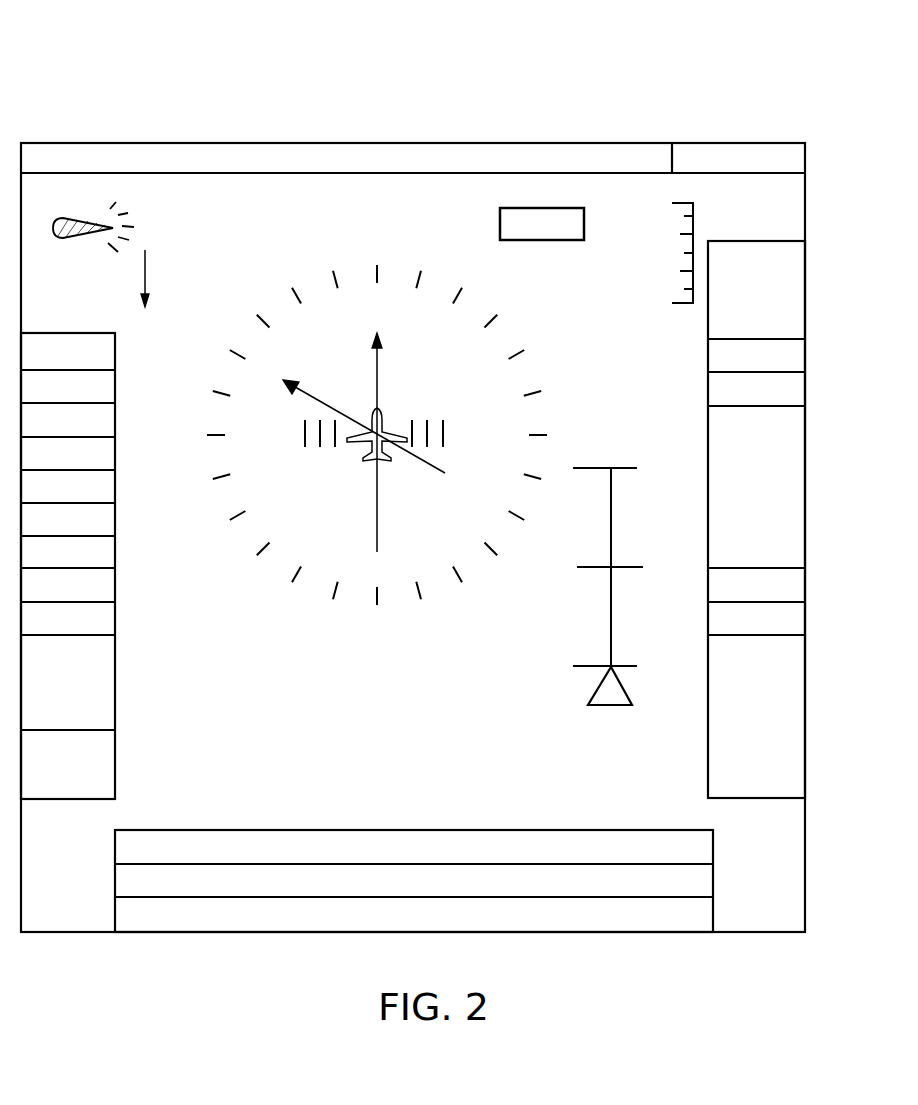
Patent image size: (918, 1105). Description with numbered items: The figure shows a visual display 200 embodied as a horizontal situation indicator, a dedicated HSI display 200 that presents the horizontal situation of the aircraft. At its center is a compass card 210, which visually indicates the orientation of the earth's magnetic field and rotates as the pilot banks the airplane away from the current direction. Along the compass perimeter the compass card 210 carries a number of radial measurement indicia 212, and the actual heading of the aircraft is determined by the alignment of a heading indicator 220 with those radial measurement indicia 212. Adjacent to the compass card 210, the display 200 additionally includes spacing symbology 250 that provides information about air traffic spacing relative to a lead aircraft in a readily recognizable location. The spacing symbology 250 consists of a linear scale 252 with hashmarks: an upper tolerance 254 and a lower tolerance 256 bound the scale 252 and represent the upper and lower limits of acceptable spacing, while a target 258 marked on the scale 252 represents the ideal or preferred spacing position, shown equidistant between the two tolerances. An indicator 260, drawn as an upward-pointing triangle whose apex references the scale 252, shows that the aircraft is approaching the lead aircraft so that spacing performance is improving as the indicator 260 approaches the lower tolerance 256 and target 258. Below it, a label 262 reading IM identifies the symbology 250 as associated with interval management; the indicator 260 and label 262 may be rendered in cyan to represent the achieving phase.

The visual display 200 is at (103, 117).
The compass card 210 is at (272, 292).
The radial measurement indicia 212 is at (418, 288).
The heading indicator 220 is at (377, 363).
The spacing symbology 250 is at (603, 450).
The linear scale 252 is at (611, 513).
The upper tolerance 254 is at (634, 467).
The lower tolerance 256 is at (631, 665).
The target 258 is at (592, 566).
The indicator 260 is at (612, 706).
The label 262 is at (549, 684).